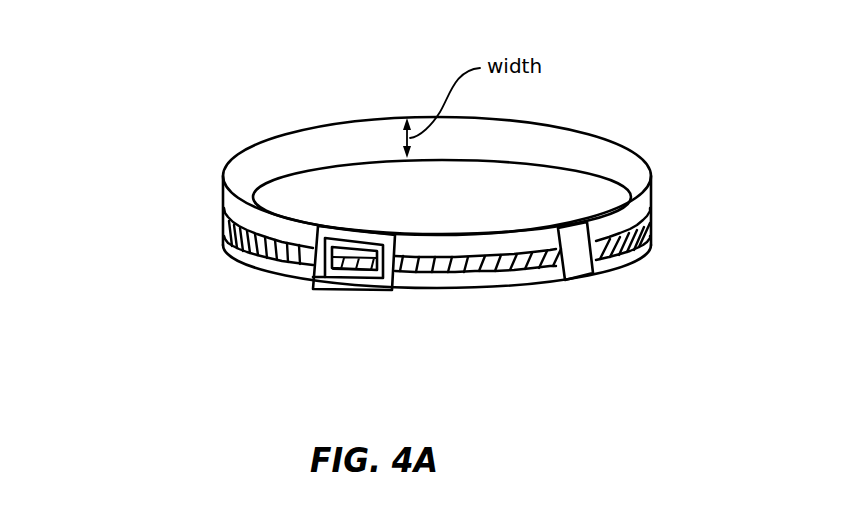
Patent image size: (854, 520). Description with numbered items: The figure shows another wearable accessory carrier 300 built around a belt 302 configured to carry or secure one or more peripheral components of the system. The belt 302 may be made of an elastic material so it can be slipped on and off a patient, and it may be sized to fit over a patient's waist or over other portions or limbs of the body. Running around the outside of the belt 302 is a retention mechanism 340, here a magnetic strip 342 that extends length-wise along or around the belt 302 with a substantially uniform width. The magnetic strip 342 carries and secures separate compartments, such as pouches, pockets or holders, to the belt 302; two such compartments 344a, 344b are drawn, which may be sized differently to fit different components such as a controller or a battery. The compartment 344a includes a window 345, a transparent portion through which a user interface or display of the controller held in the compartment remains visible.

The wearable accessory carrier 300 is at (200, 64).
The belt 302 is at (617, 144).
The retention mechanism 340 is at (196, 194).
The magnetic strip 342 is at (225, 248).
The compartment 344a is at (383, 283).
The compartment 344b is at (593, 275).
The window 345 is at (308, 283).